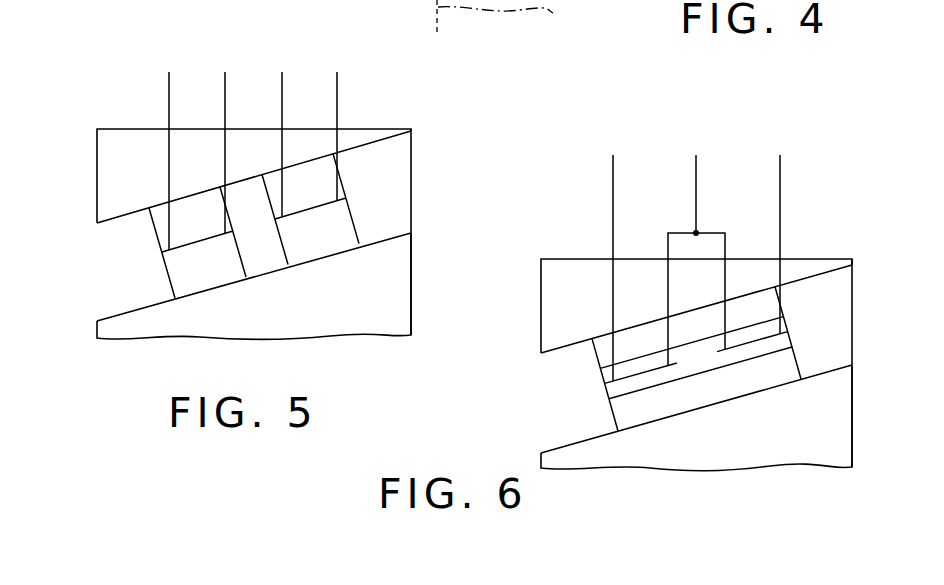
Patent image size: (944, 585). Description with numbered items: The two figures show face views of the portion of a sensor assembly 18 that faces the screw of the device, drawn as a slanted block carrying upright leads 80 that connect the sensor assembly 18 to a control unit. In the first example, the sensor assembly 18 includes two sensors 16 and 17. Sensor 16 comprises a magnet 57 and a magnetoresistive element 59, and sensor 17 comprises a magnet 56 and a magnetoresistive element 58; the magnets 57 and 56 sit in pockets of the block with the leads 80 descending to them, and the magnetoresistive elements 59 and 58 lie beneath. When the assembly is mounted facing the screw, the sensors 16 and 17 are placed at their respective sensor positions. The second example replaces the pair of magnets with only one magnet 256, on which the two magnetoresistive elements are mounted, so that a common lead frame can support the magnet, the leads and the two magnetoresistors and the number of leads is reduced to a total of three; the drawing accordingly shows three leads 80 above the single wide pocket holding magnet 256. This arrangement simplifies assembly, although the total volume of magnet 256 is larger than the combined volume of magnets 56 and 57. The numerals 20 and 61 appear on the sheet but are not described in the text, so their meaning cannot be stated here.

In FIG. 5, the sensor 16 is at (403, 215).
In FIG. 6, the sensor 16 is at (842, 370).
In FIG. 5, the sensor 17 is at (98, 213).
In FIG. 6, the sensor 17 is at (543, 344).
In FIG. 5, the sensor assembly 18 is at (97, 173).
In FIG. 6, the sensor assembly 18 is at (540, 303).
In FIG. 5, the bottom surface 20 is at (97, 302).
In FIG. 6, the bottom surface 20 is at (542, 434).
In FIG. 5, the magnet 56 is at (303, 175).
In FIG. 5, the magnet 57 is at (193, 208).
In FIG. 5, the magnetoresistive element 58 is at (330, 217).
In FIG. 5, the magnetoresistive element 59 is at (208, 280).
In FIG. 4, the axis 61 is at (509, 14).
In FIG. 5, the leads 80 is at (278, 110).
In FIG. 6, the magnet 256 is at (693, 370).